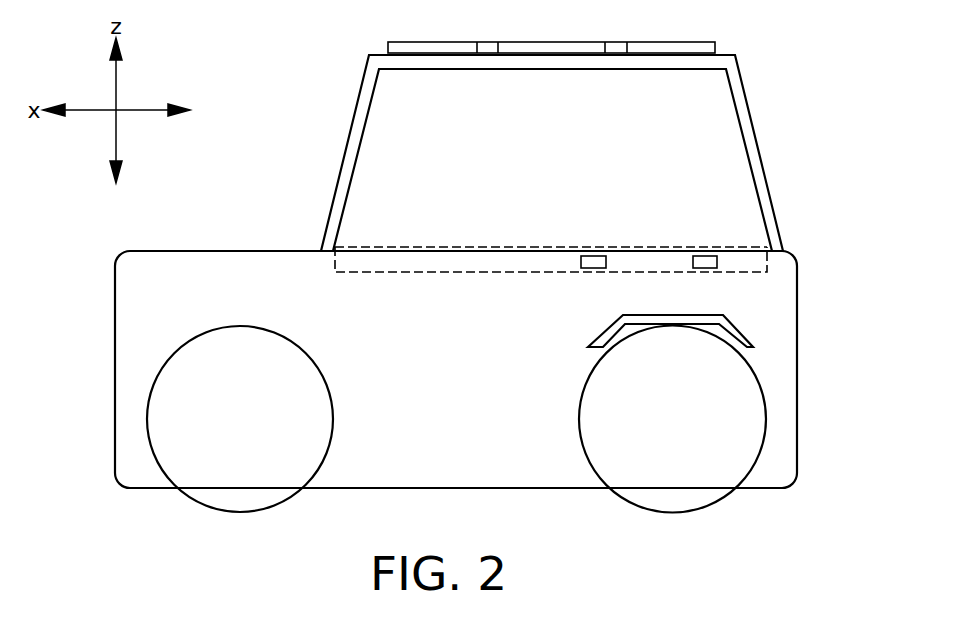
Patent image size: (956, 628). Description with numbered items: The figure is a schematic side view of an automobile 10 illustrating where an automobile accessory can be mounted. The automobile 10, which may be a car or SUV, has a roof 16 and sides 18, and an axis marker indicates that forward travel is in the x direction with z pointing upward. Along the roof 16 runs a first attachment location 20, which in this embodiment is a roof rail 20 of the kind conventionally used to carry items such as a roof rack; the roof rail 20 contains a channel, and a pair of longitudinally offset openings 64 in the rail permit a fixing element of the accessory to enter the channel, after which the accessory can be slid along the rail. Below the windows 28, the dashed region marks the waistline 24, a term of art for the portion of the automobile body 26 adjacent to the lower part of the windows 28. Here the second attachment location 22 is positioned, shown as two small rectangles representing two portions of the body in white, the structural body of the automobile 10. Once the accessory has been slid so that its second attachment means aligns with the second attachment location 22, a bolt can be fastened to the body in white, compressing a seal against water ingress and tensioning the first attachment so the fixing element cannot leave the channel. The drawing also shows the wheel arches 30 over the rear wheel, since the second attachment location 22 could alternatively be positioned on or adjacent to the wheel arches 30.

The automobile 10 is at (322, 110).
The roof 16 is at (726, 53).
The sides 18 is at (395, 392).
The first attachment location (roof rail) 20 is at (650, 45).
The second attachment location 22 is at (705, 253).
The waistline 24 is at (770, 258).
The automobile body 26 is at (546, 458).
The windows 28 is at (384, 242).
The wheel arches 30 is at (742, 333).
The longitudinally offset opening 64 is at (488, 48).